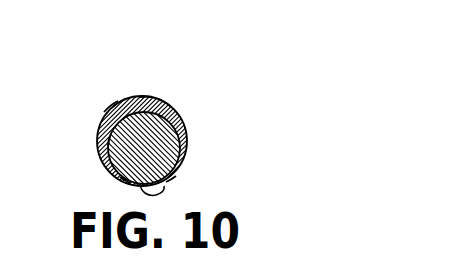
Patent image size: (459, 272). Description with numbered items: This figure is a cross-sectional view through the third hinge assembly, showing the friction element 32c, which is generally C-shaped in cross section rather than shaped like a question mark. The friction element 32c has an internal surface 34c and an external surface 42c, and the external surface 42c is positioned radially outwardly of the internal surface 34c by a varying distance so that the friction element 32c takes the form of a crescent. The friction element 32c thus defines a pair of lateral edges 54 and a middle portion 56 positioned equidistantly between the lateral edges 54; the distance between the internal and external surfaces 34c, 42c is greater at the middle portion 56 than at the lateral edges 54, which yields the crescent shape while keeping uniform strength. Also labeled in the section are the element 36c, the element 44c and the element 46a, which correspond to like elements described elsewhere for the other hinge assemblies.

The friction element 32c is at (158, 102).
The internal surface 34c is at (184, 122).
The junction region 36c is at (168, 187).
The external surface 42c is at (118, 103).
The inner wall 44c is at (122, 140).
The lobe 46a is at (163, 187).
The lateral edges 54 is at (132, 181).
The middle portion 56 is at (146, 102).